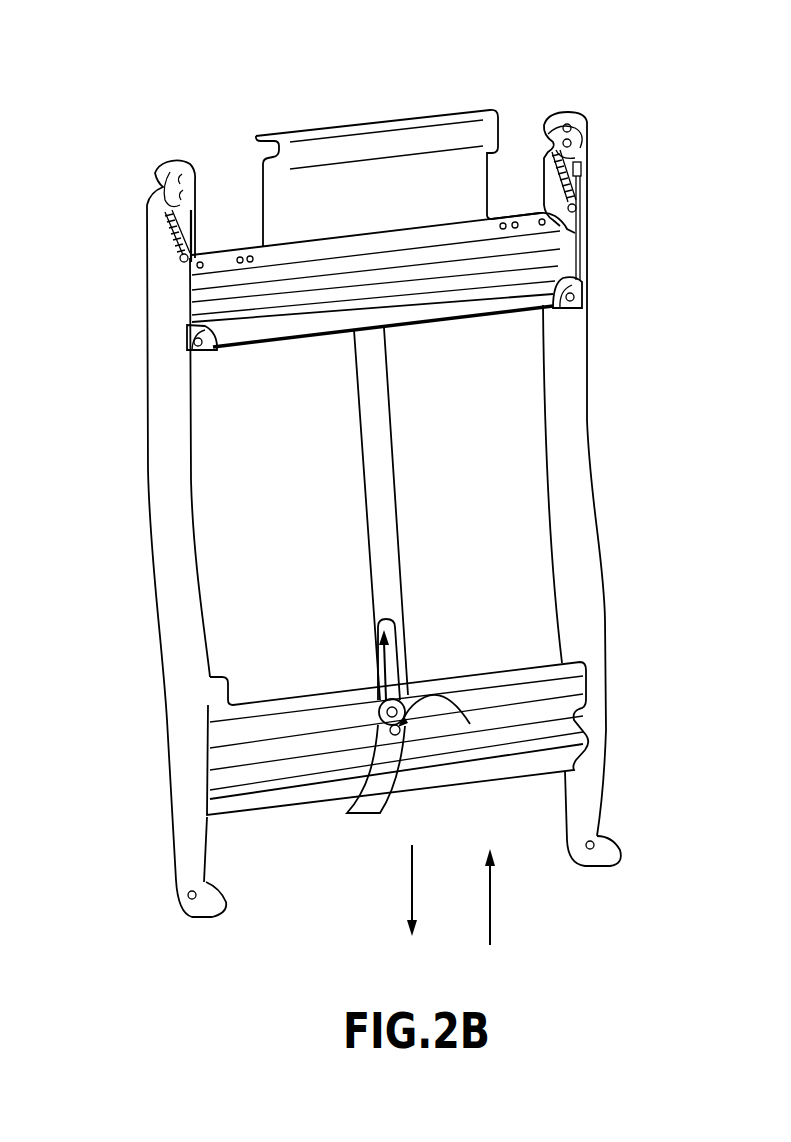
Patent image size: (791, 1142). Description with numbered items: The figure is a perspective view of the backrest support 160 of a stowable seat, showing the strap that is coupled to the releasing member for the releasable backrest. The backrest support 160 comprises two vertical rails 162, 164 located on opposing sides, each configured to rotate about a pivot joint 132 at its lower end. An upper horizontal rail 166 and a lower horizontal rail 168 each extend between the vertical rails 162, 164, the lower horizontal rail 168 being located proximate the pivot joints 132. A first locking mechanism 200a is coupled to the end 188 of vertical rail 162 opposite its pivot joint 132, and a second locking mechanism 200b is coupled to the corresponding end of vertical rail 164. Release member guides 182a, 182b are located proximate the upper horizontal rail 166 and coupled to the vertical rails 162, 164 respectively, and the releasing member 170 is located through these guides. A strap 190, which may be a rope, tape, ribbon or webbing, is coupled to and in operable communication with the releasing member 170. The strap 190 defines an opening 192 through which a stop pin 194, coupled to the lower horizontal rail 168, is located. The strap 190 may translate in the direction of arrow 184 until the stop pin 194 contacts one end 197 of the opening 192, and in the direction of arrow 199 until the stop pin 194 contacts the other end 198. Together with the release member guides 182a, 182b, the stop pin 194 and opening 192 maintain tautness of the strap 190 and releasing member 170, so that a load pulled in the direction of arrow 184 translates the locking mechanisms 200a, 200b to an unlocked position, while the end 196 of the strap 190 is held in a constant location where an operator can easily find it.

The backrest support 160 is at (91, 89).
The vertical rail 162 is at (578, 445).
The vertical rail 164 is at (182, 495).
The upper horizontal rail 166 is at (368, 148).
The lower horizontal rail 168 is at (527, 700).
The releasing member 170 is at (472, 326).
The release member guide 182a is at (582, 294).
The release member guide 182b is at (187, 342).
The arrow 184 is at (412, 872).
The end of vertical rail 188 is at (586, 121).
The strap 190 is at (383, 519).
The opening 192 is at (392, 650).
The stop pin 194 is at (393, 705).
The end of strap 196 is at (388, 792).
The end of opening 197 is at (382, 650).
The end of opening 198 is at (444, 724).
The arrow 199 is at (490, 897).
The first locking mechanism 200a is at (576, 101).
The second locking mechanism 200b is at (182, 149).
The pivot joint 132 is at (200, 885).